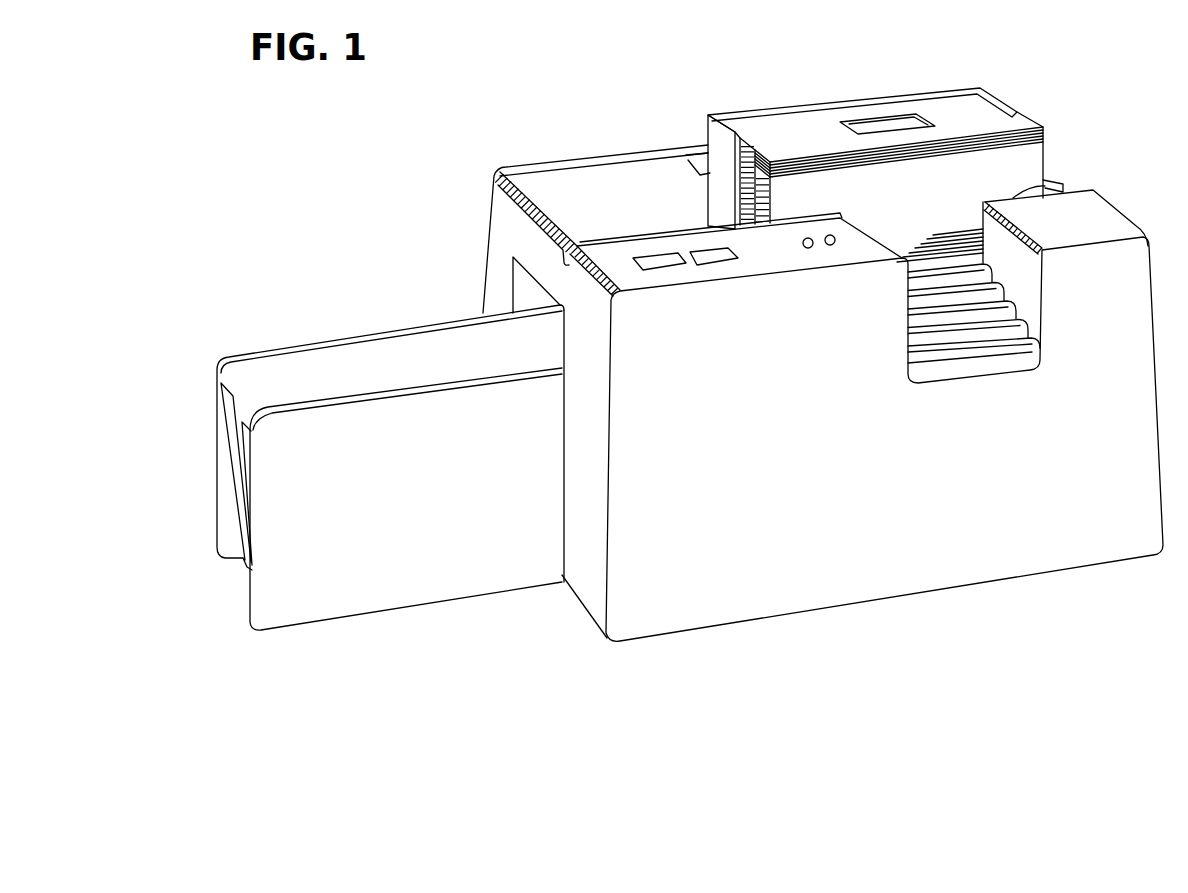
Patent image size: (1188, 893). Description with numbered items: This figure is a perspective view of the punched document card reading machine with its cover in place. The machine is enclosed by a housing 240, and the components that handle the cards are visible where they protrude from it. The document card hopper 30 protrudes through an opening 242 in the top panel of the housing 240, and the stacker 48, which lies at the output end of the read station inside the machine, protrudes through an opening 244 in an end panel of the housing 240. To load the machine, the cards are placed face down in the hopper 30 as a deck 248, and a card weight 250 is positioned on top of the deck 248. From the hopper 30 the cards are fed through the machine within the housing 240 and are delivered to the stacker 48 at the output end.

The document card hopper 30 is at (718, 143).
The stacker 48 is at (422, 585).
The housing 240 is at (1077, 550).
The opening 242 is at (1013, 198).
The opening 244 is at (562, 505).
The deck 248 is at (1045, 150).
The card weight 250 is at (867, 107).